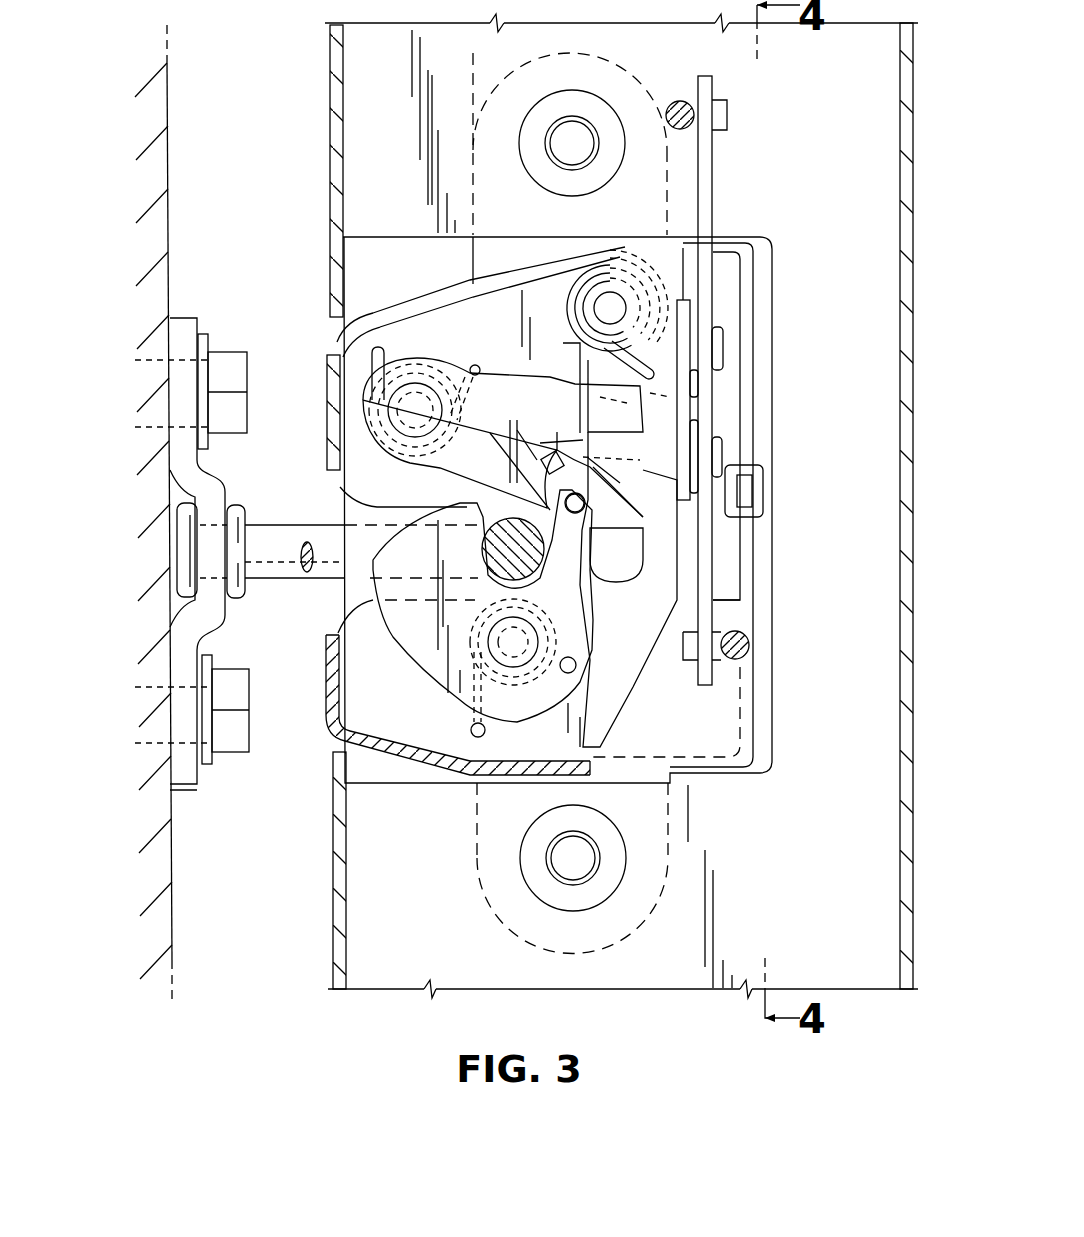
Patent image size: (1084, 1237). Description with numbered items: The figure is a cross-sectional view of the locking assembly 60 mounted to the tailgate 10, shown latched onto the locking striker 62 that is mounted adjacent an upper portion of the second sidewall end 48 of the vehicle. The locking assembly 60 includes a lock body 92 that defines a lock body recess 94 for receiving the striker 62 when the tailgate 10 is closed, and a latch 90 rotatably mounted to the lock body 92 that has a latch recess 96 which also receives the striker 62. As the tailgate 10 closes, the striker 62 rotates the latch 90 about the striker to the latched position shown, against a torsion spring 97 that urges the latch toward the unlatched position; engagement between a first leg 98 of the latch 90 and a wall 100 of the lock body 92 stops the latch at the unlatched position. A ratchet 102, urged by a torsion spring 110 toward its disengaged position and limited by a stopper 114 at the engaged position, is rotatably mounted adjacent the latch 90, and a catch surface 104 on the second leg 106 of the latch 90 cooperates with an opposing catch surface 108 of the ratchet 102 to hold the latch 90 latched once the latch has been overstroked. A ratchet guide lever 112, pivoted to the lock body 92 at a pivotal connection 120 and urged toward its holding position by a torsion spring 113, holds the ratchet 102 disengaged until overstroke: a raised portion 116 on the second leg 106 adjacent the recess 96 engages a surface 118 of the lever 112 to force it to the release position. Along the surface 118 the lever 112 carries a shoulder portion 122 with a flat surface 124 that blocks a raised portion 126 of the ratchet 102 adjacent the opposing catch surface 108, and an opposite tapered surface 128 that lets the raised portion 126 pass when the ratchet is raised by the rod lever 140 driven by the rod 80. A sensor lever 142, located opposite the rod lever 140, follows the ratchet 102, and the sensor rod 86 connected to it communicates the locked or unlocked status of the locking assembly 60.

The tailgate 10 is at (875, 982).
The second sidewall end 48 is at (172, 863).
The locking assembly 60 is at (793, 341).
The locking striker 62 is at (335, 574).
The rod 80 is at (750, 645).
The sensor rod 86 is at (670, 103).
The latch 90 is at (424, 672).
The lock body 92 is at (715, 740).
The lock body recess 94 is at (345, 518).
The latch recess 96 is at (495, 500).
The torsion spring 97 is at (470, 722).
The first leg 98 is at (413, 623).
The wall 100 is at (415, 745).
The ratchet 102 is at (512, 370).
The catch surface 104 is at (512, 458).
The second leg 106 is at (620, 587).
The opposing catch surface 108 is at (545, 478).
The torsion spring 110 is at (368, 362).
The ratchet guide lever 112 is at (647, 558).
The torsion spring 113 is at (583, 292).
The stopper 114 is at (765, 493).
The raised portion 116 is at (575, 514).
The surface 118 is at (577, 664).
The pivotal connection 120 is at (610, 300).
The shoulder portion 122 is at (573, 440).
The flat surface 124 is at (573, 425).
The raised portion 126 is at (545, 452).
The tapered surface 128 is at (593, 481).
The rod lever 140 is at (705, 617).
The sensor lever 142 is at (708, 180).